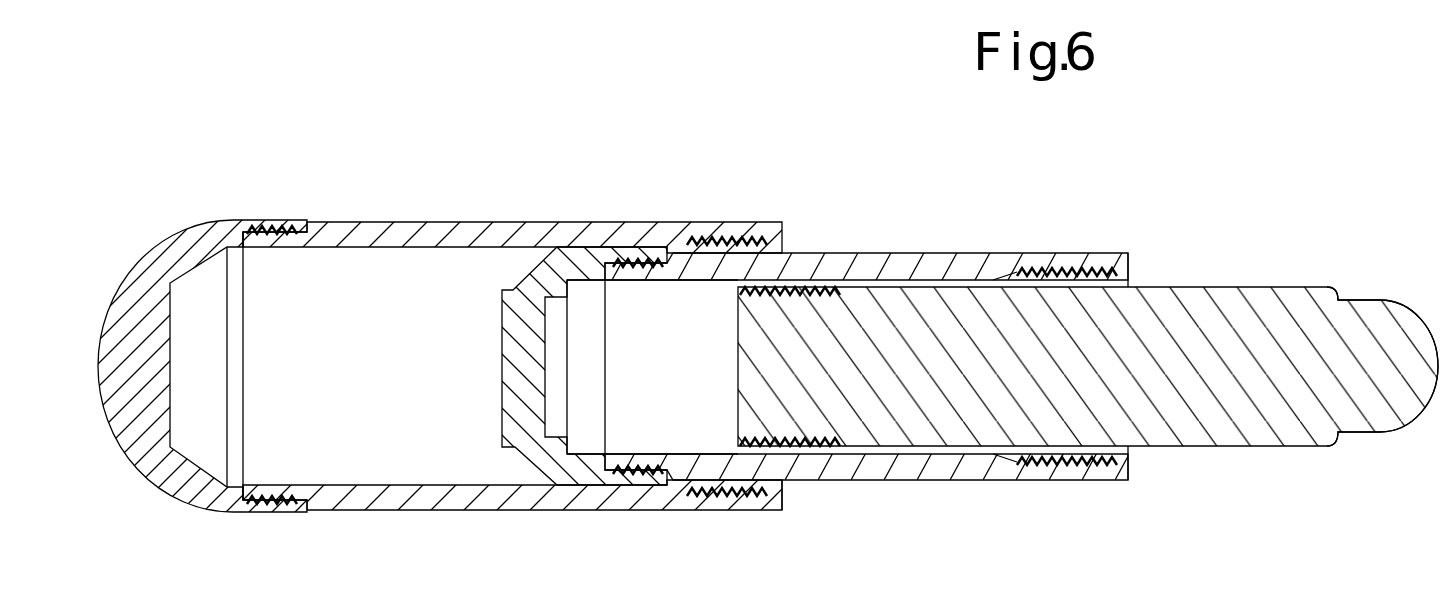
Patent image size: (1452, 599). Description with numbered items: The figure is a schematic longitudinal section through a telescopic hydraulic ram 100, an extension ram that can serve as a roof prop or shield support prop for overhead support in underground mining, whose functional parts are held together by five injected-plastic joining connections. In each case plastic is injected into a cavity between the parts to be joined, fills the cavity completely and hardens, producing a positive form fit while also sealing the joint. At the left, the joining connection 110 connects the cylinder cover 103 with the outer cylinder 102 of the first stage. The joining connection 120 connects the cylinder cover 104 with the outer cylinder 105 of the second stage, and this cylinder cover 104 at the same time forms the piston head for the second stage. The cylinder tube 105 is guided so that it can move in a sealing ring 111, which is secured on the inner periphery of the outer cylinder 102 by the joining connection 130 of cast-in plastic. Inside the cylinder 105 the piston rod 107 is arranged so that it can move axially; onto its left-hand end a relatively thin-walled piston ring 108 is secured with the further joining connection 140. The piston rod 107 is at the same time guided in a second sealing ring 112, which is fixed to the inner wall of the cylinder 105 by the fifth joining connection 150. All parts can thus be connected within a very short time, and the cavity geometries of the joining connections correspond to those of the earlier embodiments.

The telescopic hydraulic ram 100 is at (788, 170).
The outer cylinder 102 is at (442, 232).
The cylinder cover 103 is at (203, 233).
The cylinder cover 104 is at (512, 373).
The outer cylinder 105 is at (937, 470).
The piston rod 107 is at (1230, 405).
The piston ring 108 is at (737, 288).
The joining connection 110 is at (293, 204).
The sealing ring 111 is at (783, 487).
The second sealing ring 112 is at (1130, 277).
The joining connection 120 is at (637, 247).
The joining connection 130 is at (708, 506).
The joining connection 140 is at (827, 258).
The joining connection 150 is at (1078, 256).